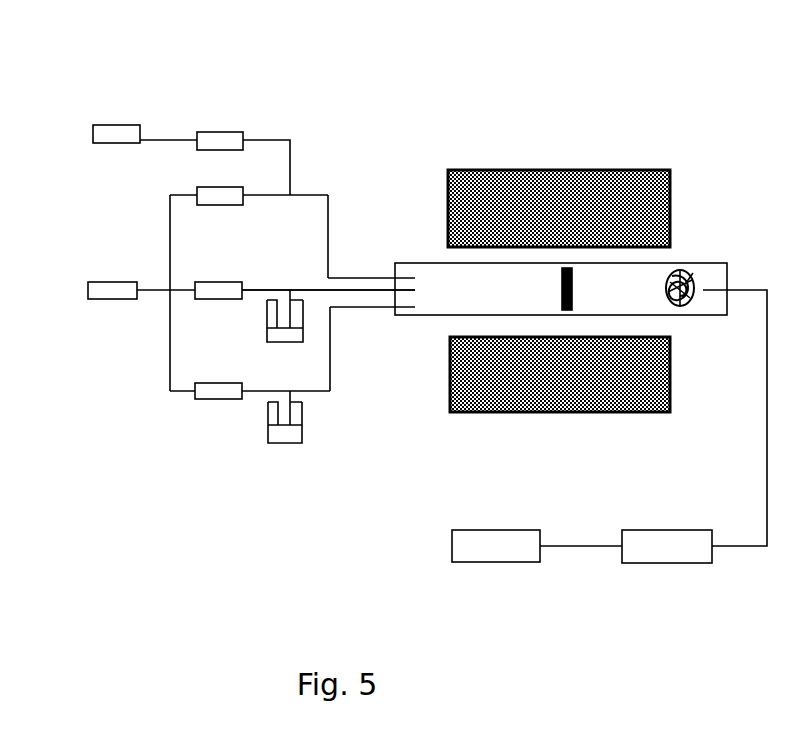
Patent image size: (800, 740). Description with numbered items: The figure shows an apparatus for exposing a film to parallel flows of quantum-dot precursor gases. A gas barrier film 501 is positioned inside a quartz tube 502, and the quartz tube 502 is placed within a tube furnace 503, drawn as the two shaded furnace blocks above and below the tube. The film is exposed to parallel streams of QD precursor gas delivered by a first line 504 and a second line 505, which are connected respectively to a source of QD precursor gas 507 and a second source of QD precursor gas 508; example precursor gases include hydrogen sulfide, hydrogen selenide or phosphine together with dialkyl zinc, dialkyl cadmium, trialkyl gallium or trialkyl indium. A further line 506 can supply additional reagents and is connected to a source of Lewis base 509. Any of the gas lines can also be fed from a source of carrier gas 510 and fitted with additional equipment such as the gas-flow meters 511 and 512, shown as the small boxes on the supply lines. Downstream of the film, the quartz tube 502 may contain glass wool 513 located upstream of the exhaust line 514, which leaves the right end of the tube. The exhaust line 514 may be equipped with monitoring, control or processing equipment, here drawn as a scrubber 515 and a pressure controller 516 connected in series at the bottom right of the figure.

The gas barrier film 501 is at (557, 292).
The quartz tube 502 is at (680, 277).
The tube furnace 503 is at (537, 168).
The line 504 is at (313, 193).
The line 505 is at (374, 308).
The line 506 is at (357, 292).
The source of QD precursor gas 507 is at (107, 128).
The source of QD precursor gas 508 is at (283, 440).
The source of Lewis base 509 is at (292, 332).
The source of carrier gas 510 is at (102, 280).
The gas-flow meter 511 is at (232, 184).
The gas-flow meter 512 is at (197, 392).
The glass wool 513 is at (693, 273).
The exhaust line 514 is at (767, 332).
The scrubber 515 is at (672, 574).
The pressure controller 516 is at (500, 573).